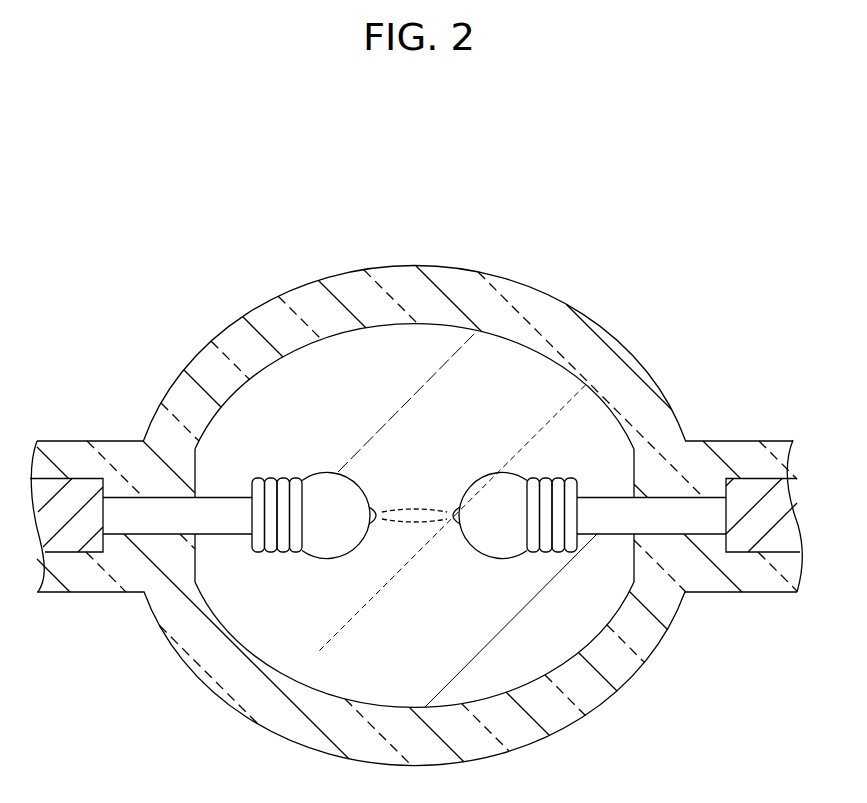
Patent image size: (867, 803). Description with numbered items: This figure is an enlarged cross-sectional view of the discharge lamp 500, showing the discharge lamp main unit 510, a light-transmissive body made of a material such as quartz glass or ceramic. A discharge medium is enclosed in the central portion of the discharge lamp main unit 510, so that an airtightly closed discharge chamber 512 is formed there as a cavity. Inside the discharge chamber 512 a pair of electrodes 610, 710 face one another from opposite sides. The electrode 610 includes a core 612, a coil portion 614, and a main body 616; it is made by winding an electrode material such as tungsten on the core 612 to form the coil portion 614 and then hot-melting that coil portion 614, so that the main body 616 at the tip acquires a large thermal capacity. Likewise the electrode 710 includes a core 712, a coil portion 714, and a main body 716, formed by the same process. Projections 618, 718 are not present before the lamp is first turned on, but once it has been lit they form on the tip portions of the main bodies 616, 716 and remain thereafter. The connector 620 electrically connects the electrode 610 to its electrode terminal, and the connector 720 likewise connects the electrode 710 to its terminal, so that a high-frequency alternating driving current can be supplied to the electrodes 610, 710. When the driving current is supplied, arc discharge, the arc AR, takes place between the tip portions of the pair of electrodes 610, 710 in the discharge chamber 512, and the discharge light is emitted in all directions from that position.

The discharge lamp 500 is at (563, 138).
The discharge lamp main unit 510 is at (268, 313).
The discharge chamber 512 is at (487, 375).
The electrode 610 is at (311, 597).
The core 612 is at (138, 525).
The coil portion 614 is at (304, 558).
The main body 616 is at (348, 557).
The projection 618 is at (381, 524).
The connector 620 is at (76, 492).
The electrode 710 is at (511, 598).
The core 712 is at (698, 527).
The coil portion 714 is at (580, 558).
The main body 716 is at (481, 553).
The projection 718 is at (452, 518).
The connector 720 is at (750, 492).
The arc AR is at (397, 505).